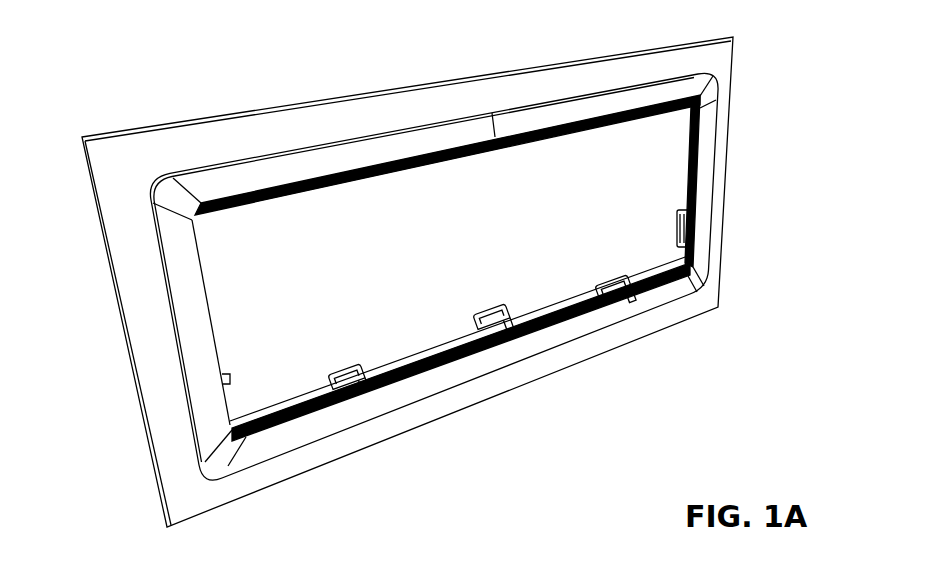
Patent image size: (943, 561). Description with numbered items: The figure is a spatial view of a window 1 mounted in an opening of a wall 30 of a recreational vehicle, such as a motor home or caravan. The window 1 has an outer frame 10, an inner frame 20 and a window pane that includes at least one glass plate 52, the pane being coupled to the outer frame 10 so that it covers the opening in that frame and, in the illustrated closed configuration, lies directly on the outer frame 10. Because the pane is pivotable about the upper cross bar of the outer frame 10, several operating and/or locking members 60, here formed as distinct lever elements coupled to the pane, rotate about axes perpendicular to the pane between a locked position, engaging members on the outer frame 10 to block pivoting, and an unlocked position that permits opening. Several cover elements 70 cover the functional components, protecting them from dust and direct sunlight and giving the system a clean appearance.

The window 1 is at (759, 184).
The outer frame 10 is at (207, 443).
The inner frame 20 is at (327, 157).
The wall 30 is at (147, 142).
The glass plate 52 is at (237, 273).
The operating and/or locking member 60 is at (222, 378).
The cover element 70 is at (267, 427).